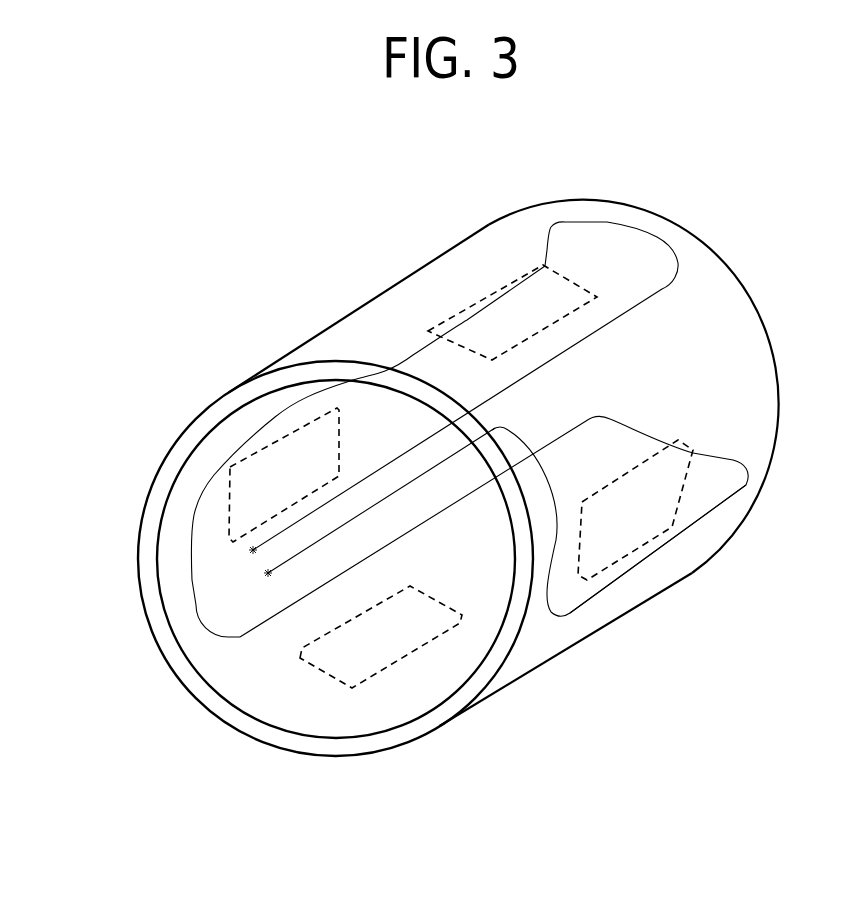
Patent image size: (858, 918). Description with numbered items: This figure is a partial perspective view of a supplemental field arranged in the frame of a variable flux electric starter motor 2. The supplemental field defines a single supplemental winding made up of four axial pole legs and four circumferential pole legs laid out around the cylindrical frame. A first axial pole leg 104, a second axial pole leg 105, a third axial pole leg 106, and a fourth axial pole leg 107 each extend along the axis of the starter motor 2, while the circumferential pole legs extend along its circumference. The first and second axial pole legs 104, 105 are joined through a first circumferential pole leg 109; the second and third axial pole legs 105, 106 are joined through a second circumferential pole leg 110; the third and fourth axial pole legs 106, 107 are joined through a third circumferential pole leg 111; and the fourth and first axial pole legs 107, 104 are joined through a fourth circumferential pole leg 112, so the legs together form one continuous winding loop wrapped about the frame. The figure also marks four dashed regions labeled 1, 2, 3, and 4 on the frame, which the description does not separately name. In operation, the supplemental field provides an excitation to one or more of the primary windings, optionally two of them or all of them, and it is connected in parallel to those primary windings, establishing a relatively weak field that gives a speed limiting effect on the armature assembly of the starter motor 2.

The first sensor region 1 is at (516, 334).
The starter motor 2 is at (288, 482).
The third sensor region 3 is at (385, 652).
The fourth sensor region 4 is at (638, 524).
The first axial pole leg 104 is at (543, 367).
The second axial pole leg 105 is at (650, 552).
The third axial pole leg 106 is at (405, 537).
The fourth axial pole leg 107 is at (410, 365).
The first circumferential pole leg 109 is at (560, 510).
The second circumferential pole leg 110 is at (750, 488).
The third circumferential pole leg 111 is at (190, 572).
The fourth circumferential pole leg 112 is at (618, 226).